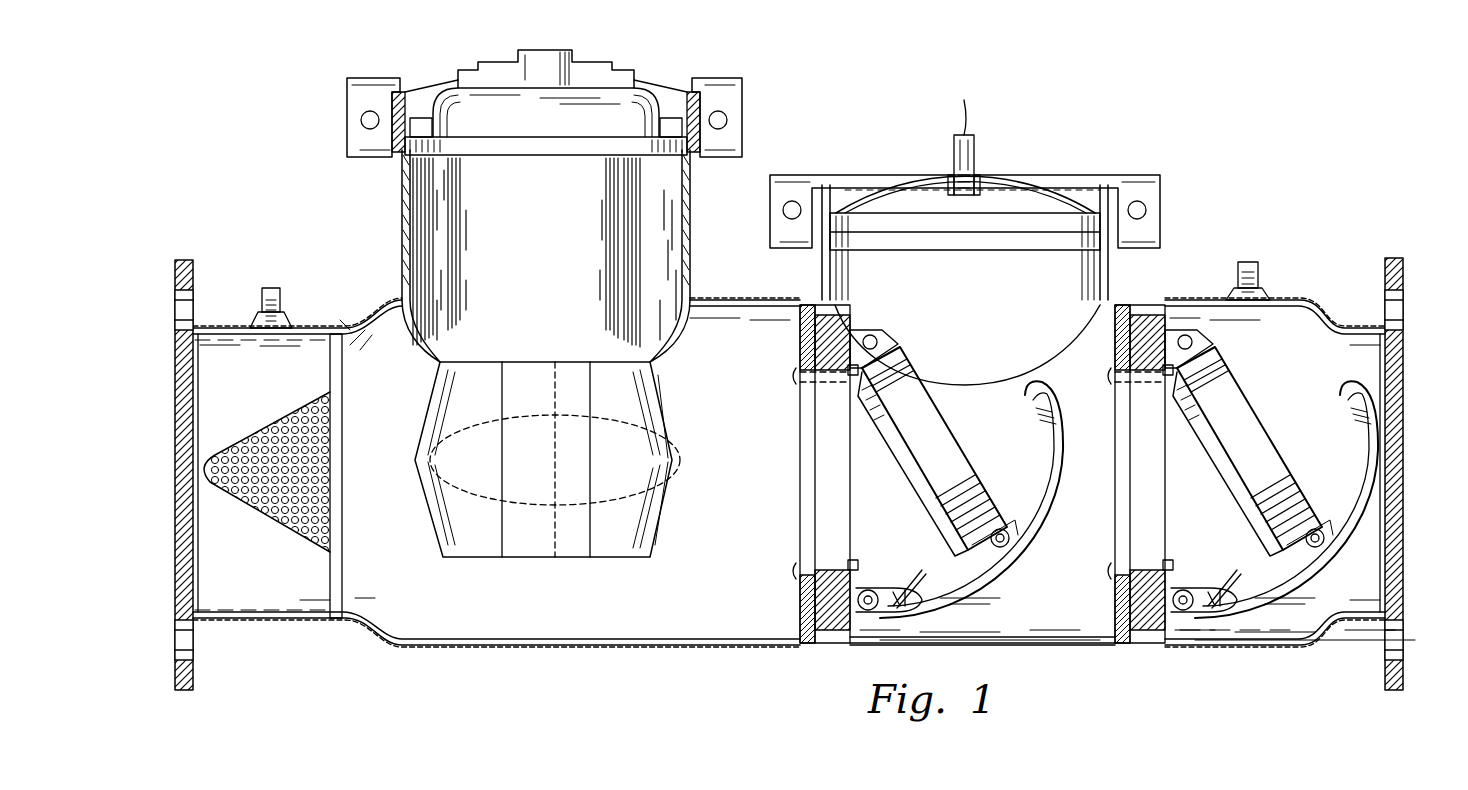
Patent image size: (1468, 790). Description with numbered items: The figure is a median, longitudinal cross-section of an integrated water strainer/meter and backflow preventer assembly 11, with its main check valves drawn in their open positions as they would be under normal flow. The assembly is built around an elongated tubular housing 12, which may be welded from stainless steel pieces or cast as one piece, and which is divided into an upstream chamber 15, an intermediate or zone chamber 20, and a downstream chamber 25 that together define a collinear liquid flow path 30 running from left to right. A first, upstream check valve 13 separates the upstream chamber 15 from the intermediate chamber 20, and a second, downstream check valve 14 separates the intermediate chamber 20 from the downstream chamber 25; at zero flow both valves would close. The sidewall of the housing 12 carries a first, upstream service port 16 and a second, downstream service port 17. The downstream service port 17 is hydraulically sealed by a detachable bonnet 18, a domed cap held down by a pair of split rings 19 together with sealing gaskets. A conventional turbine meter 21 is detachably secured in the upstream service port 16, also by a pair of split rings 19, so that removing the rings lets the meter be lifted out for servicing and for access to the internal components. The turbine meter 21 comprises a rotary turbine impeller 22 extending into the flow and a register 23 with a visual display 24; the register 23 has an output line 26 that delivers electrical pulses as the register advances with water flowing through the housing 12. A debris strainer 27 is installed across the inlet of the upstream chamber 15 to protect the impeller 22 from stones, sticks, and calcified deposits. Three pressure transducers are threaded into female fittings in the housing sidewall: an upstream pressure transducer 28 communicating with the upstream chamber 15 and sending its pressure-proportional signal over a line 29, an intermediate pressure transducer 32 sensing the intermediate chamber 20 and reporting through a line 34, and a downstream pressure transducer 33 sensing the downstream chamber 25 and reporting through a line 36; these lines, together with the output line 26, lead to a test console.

The assembly 11 is at (302, 150).
The housing 12 is at (388, 308).
The first, upstream check valve 13 is at (798, 512).
The second, downstream check valve 14 is at (1172, 520).
The upstream chamber 15 is at (218, 590).
The first, upstream service port 16 is at (412, 207).
The second, downstream service port 17 is at (1075, 272).
The bonnet 18 is at (1035, 190).
The split rings 19 is at (748, 105).
The intermediate chamber 20 is at (1085, 630).
The turbine meter 21 is at (625, 205).
The rotary turbine impeller 22 is at (470, 405).
The register 23 is at (448, 105).
The visual display 24 is at (545, 50).
The downstream chamber 25 is at (1370, 585).
The output line 26 is at (615, 28).
The debris strainer 27 is at (275, 425).
The upstream pressure transducer 28 is at (262, 308).
The line 29 is at (325, 296).
The liquid flow path 30 is at (170, 470).
The intermediate pressure transducer 32 is at (952, 157).
The downstream pressure transducer 33 is at (1240, 290).
The line 34 is at (985, 45).
The line 36 is at (1292, 240).